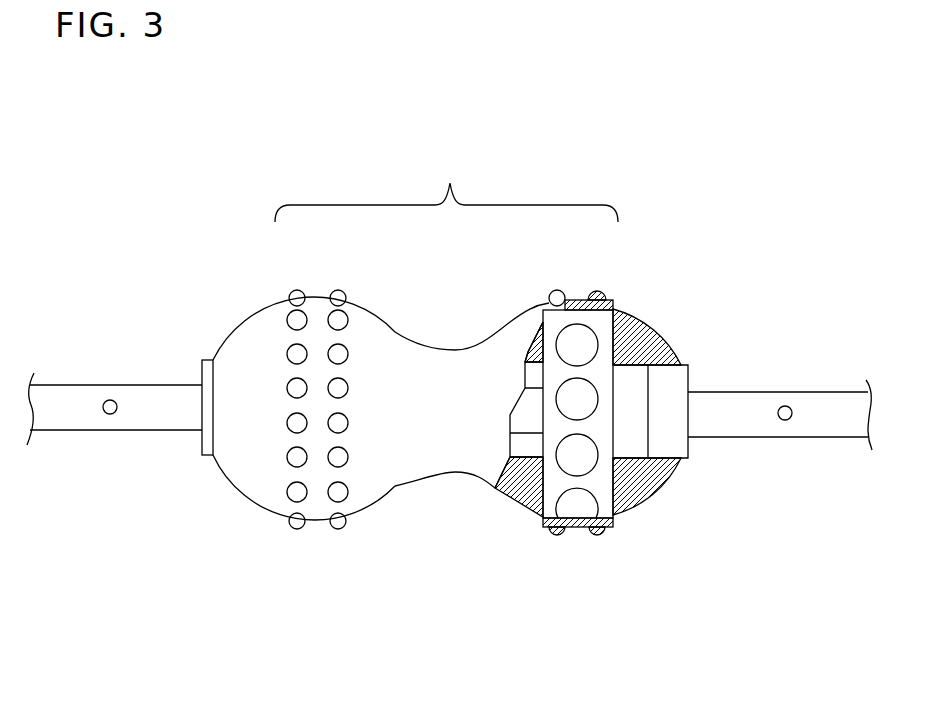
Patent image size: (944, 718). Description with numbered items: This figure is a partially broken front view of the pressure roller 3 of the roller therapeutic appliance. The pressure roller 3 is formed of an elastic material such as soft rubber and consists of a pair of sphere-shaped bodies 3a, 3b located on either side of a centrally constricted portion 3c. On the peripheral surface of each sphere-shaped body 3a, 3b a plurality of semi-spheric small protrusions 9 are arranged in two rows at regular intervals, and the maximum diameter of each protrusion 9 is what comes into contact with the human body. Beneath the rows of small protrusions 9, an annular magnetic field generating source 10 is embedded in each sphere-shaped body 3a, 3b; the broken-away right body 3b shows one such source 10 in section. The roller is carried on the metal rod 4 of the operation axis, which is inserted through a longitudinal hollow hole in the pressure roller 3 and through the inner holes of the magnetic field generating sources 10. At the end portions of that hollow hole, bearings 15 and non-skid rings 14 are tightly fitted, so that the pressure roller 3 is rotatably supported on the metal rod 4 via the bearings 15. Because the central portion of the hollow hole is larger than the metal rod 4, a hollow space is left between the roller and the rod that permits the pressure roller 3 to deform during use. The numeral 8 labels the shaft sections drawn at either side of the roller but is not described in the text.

The pressure roller 3 is at (446, 183).
The sphere-shaped body 3a is at (318, 297).
The sphere-shaped body 3b is at (573, 302).
The centrally constricted portion 3c is at (455, 349).
The metal rod 4 is at (523, 437).
The shaft 8 is at (113, 400).
The semi-spheric small protrusion 9 is at (303, 530).
The annular magnetic field generating source 10 is at (605, 320).
The non-skid ring 14 is at (633, 377).
The bearing 15 is at (683, 373).